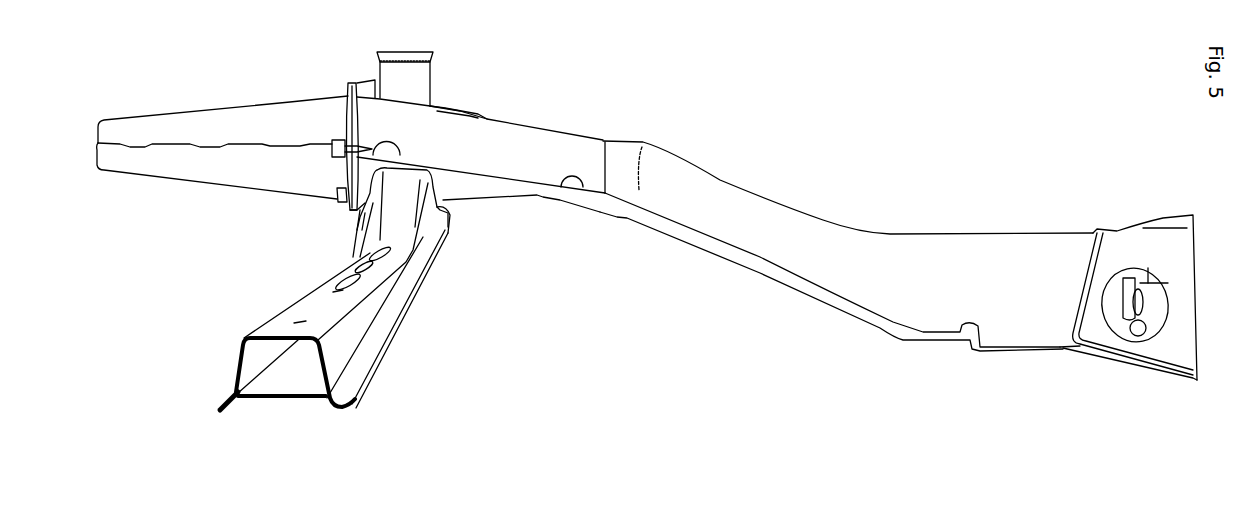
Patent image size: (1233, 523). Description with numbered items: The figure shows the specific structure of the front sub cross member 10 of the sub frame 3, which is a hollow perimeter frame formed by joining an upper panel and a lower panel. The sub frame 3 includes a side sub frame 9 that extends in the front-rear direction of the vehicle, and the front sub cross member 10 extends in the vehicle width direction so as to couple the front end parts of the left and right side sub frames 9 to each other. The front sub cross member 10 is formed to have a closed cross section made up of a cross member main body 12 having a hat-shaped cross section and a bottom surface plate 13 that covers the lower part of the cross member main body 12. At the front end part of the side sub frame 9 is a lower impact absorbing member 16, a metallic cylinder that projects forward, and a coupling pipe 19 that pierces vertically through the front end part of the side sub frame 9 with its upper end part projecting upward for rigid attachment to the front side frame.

The sub frame 3 is at (898, 215).
The side sub frame 9 is at (752, 240).
The front sub cross member 10 is at (311, 317).
The cross member main body 12 is at (238, 370).
The bottom surface plate 13 is at (278, 398).
The lower impact absorbing member 16 is at (222, 105).
The coupling pipe 19 is at (418, 90).